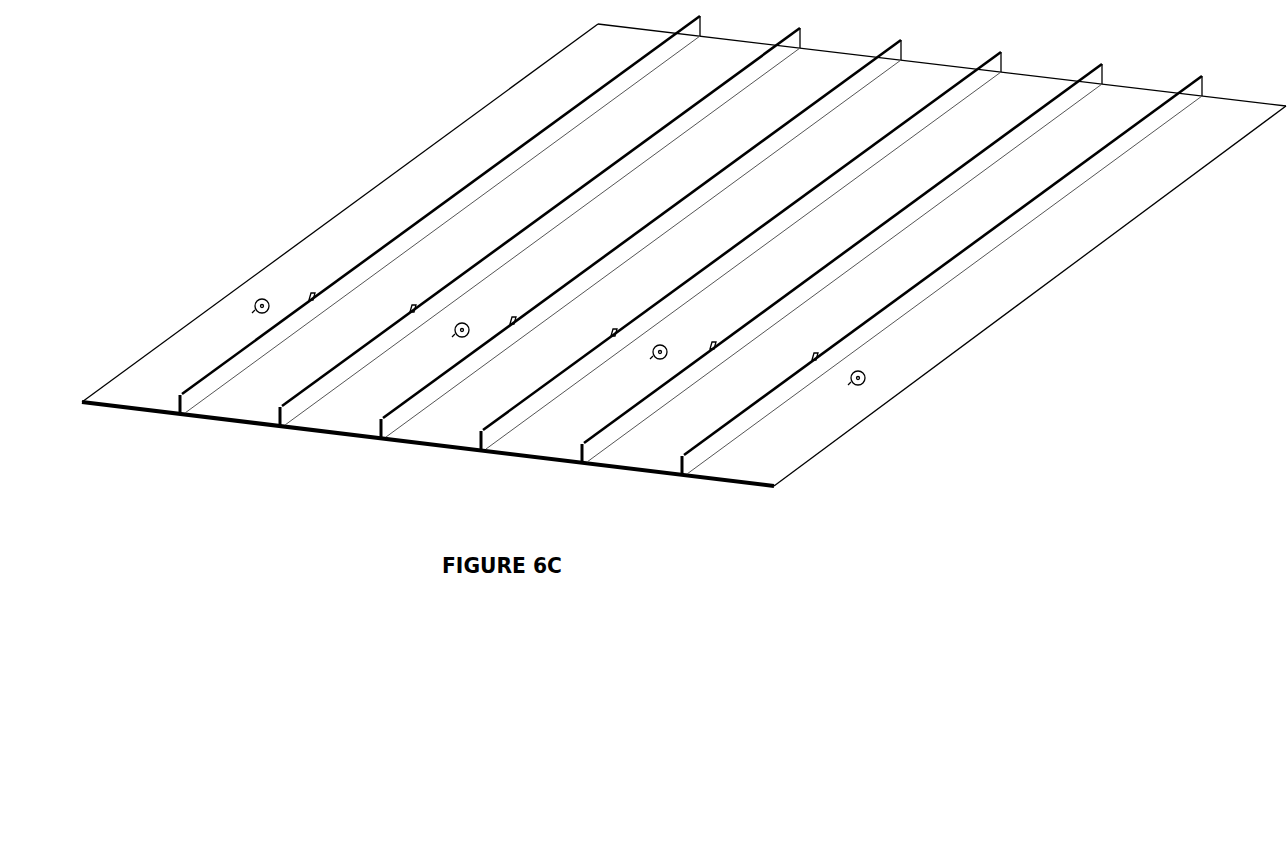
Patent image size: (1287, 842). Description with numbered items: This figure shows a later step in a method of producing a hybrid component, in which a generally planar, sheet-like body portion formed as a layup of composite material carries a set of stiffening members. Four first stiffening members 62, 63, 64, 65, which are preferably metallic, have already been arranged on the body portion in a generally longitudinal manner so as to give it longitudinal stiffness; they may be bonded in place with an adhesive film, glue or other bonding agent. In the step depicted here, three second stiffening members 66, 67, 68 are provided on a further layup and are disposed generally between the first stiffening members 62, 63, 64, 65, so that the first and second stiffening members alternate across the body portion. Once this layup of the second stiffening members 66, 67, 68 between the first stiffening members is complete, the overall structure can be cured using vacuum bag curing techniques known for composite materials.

The first stiffening member 62 is at (208, 360).
The first stiffening member 63 is at (411, 386).
The first stiffening member 64 is at (616, 401).
The first stiffening member 65 is at (816, 428).
The second stiffening member 66 is at (315, 366).
The second stiffening member 67 is at (501, 401).
The second stiffening member 68 is at (716, 413).